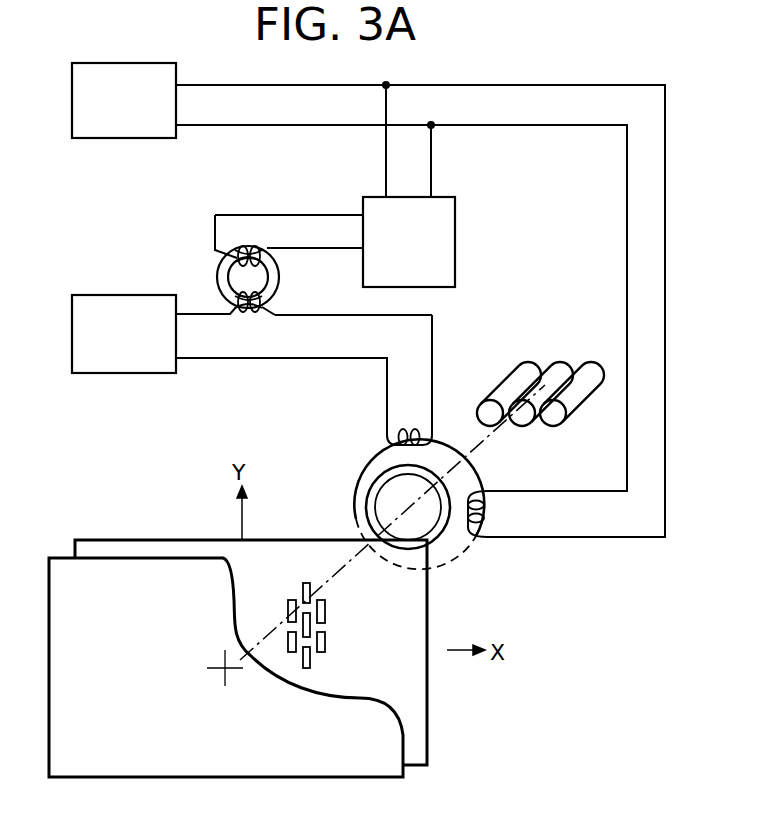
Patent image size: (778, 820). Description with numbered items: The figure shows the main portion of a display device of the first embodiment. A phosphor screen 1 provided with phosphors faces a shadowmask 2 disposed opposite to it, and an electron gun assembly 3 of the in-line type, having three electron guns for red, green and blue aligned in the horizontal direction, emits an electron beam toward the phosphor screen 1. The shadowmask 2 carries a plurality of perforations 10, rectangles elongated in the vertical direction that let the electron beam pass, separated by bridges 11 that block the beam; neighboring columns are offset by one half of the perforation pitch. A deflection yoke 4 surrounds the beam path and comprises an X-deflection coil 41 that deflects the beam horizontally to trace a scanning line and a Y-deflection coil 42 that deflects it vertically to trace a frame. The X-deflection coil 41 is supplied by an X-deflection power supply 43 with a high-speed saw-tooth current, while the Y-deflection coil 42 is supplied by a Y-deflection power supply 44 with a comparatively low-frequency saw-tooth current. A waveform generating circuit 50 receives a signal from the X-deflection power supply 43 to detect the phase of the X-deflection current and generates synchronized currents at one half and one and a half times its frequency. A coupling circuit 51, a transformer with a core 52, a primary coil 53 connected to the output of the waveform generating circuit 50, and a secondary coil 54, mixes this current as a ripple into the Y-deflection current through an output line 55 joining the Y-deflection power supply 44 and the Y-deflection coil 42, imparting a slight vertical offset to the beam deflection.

The phosphor screen 1 is at (400, 745).
The shadowmask 2 is at (417, 697).
The electron gun assembly 3 is at (517, 372).
The deflection yoke 4 is at (485, 467).
The perforations 10 is at (325, 605).
The bridges 11 is at (318, 628).
The X-deflection coil 41 is at (478, 522).
The Y-deflection coil 42 is at (387, 435).
The X-deflection power supply 43 is at (103, 138).
The Y-deflection power supply 44 is at (123, 373).
The waveform generating circuit 50 is at (455, 218).
The coupling circuit 51 is at (143, 202).
The core 52 is at (225, 272).
The primary coil 53 is at (233, 252).
The secondary coil 54 is at (235, 310).
The output line 55 is at (430, 315).